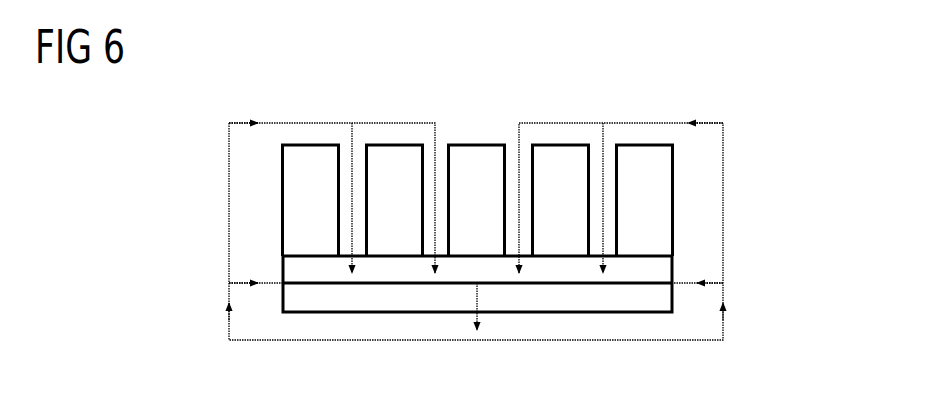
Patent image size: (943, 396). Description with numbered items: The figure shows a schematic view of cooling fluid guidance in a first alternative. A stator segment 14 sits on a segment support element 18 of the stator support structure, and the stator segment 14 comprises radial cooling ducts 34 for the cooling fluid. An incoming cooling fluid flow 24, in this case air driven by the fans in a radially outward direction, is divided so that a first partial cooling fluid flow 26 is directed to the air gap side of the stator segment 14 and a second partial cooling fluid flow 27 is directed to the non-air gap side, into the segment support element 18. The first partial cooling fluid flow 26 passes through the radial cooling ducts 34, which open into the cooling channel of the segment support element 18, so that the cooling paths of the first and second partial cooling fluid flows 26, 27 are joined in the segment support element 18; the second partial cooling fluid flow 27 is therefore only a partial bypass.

The stator segment 14 is at (643, 200).
The segment support element 18 is at (572, 312).
The incoming cooling fluid flow 24 is at (229, 330).
The first partial cooling fluid flow 26 is at (290, 122).
The second partial cooling fluid flow 27 is at (273, 285).
The radial cooling ducts 34 is at (527, 152).